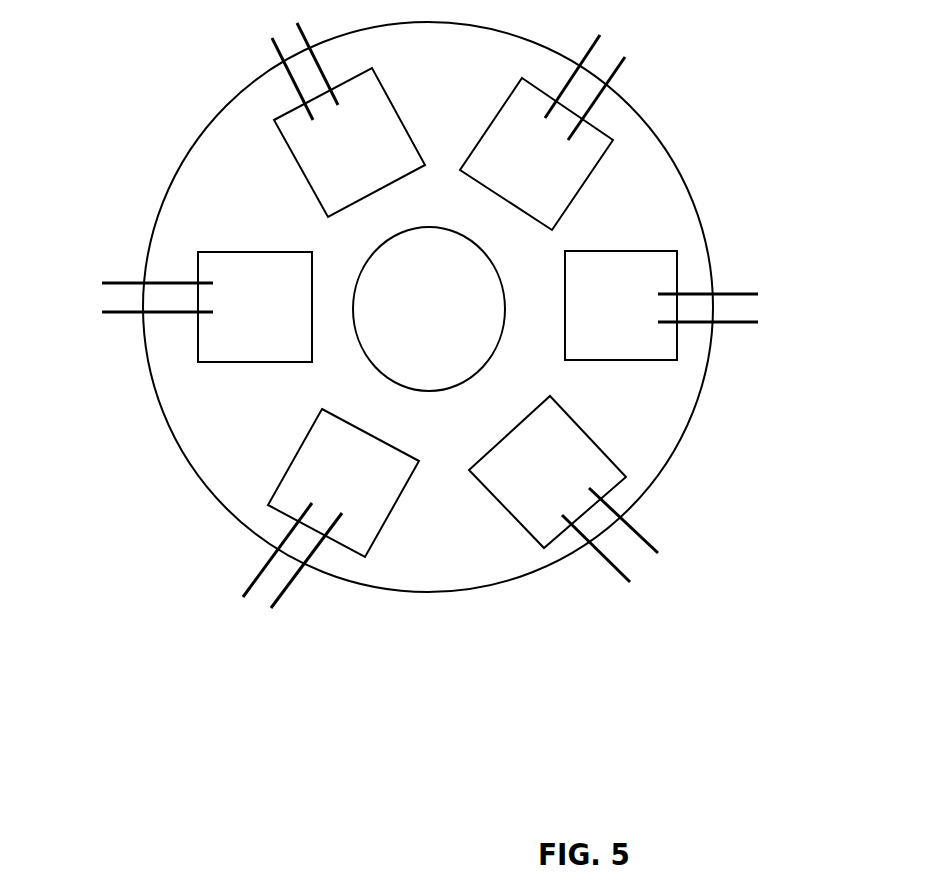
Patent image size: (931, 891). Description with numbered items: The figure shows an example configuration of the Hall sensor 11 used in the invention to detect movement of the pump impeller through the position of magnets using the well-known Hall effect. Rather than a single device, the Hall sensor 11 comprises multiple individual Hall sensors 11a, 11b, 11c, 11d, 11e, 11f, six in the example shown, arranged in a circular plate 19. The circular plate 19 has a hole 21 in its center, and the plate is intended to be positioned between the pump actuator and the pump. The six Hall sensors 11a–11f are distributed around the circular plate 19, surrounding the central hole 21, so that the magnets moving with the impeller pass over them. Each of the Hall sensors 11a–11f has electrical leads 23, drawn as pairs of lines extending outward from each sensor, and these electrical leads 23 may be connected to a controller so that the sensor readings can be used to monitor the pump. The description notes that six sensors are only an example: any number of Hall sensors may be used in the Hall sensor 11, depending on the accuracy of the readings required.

The Hall sensor 11 is at (395, 364).
The Hall sensor 11a is at (207, 307).
The Hall sensor 11b is at (331, 558).
The Hall sensor 11c is at (563, 489).
The Hall sensor 11d is at (661, 305).
The Hall sensor 11e is at (542, 132).
The Hall sensor 11f is at (348, 120).
The circular plate 19 is at (255, 419).
The hole 21 is at (423, 309).
The electrical leads 23 is at (259, 586).